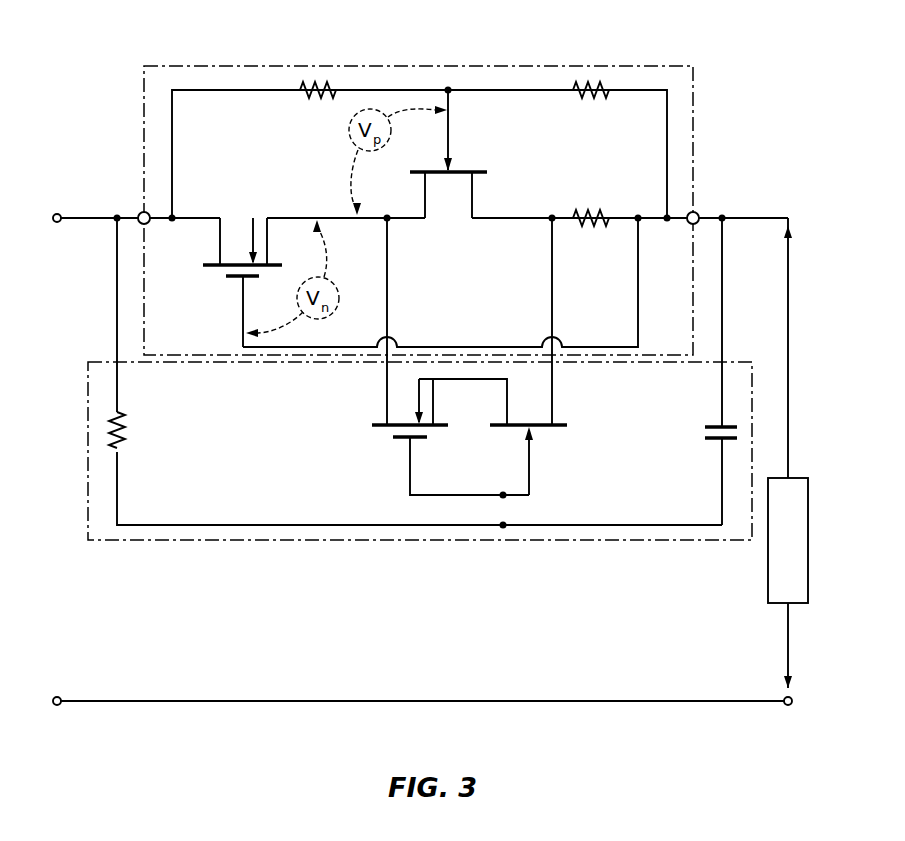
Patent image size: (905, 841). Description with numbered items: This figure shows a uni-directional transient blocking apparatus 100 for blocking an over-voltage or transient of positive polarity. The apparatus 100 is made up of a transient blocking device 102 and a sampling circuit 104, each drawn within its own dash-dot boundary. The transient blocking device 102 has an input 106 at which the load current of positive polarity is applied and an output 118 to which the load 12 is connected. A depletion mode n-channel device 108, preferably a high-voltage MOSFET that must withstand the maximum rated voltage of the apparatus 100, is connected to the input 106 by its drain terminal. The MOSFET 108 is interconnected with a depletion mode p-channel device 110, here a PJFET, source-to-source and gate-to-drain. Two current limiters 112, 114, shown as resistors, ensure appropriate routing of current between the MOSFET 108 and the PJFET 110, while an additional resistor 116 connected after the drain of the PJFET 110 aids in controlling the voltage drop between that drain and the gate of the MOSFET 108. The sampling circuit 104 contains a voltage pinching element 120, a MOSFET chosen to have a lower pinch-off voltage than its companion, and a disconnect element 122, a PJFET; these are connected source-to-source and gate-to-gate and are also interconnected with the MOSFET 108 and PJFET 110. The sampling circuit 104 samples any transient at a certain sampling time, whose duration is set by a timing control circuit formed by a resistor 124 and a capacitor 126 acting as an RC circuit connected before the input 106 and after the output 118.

The uni-directional transient blocking apparatus 100 is at (98, 50).
The transient blocking device 102 is at (144, 117).
The sampling circuit 104 is at (103, 360).
The input 106 is at (139, 214).
The depletion mode n-channel device 108 is at (253, 217).
The depletion mode p-channel device 110 is at (486, 171).
The current limiter 112 is at (302, 94).
The current limiter 114 is at (596, 102).
The additional resistor 116 is at (590, 228).
The output 118 is at (699, 213).
The voltage pinching element 120 is at (373, 427).
The disconnect element 122 is at (565, 430).
The resistor 124 is at (128, 432).
The capacitor 126 is at (705, 425).
The load 12 is at (768, 585).